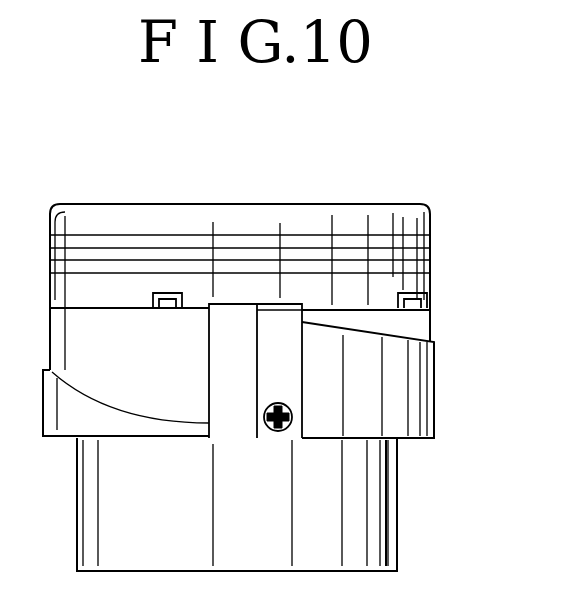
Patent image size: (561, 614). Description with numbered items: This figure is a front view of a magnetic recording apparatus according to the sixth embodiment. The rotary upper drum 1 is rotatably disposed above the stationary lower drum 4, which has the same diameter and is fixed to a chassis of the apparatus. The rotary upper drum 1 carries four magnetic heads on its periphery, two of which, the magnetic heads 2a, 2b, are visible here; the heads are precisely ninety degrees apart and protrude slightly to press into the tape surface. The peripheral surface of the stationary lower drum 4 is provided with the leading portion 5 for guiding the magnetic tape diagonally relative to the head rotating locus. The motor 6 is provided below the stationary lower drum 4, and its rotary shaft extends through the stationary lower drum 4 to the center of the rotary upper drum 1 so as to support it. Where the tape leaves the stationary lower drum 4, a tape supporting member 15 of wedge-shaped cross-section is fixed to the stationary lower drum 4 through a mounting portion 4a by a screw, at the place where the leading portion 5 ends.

The rotary upper drum 1 is at (355, 222).
The magnetic head 2a is at (172, 297).
The magnetic head 2b is at (412, 293).
The stationary lower drum 4 is at (410, 325).
The mounting portion 4a is at (286, 330).
The leading portion 5 is at (393, 404).
The motor 6 is at (355, 536).
The tape supporting member 15 is at (233, 330).